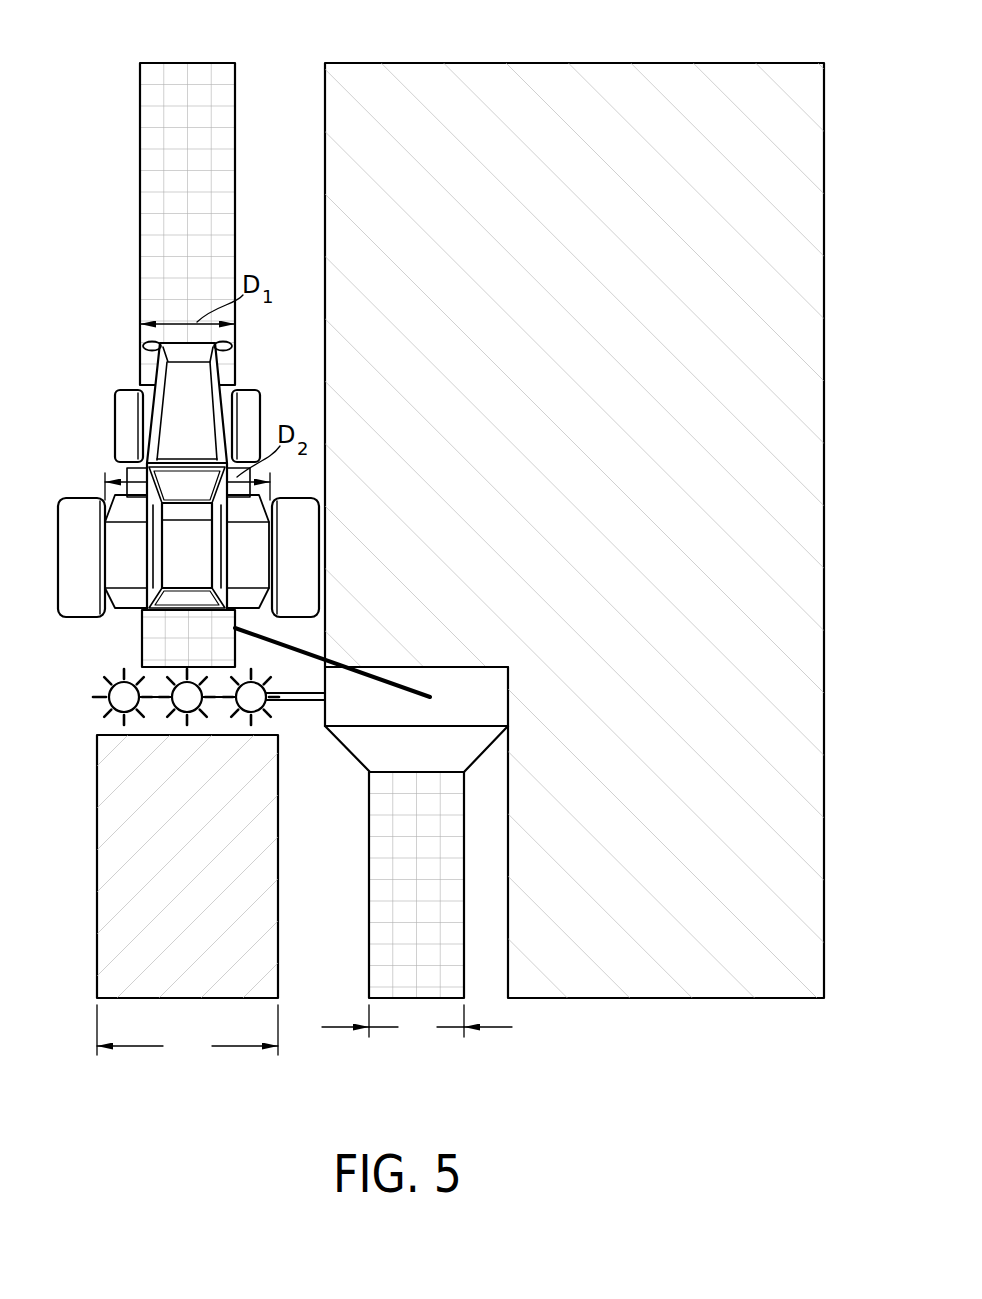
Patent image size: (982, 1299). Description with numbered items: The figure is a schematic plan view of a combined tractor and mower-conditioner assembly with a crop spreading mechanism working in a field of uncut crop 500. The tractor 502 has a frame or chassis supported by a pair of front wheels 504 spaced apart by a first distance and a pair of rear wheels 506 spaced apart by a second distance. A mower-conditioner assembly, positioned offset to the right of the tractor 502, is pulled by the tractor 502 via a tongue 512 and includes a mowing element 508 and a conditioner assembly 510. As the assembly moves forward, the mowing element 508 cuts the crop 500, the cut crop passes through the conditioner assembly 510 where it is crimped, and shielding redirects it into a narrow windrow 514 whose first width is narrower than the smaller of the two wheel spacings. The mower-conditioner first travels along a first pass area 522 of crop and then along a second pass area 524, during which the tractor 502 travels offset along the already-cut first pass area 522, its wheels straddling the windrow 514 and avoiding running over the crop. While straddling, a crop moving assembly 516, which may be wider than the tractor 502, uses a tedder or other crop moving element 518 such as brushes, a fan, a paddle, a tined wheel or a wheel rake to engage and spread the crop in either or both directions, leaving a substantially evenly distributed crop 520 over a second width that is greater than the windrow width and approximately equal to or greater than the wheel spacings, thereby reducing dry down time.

The uncut crop 500 is at (592, 71).
The tractor 502 is at (185, 554).
The front wheels 504 is at (122, 425).
The rear wheels 506 is at (78, 533).
The mowing element 508 is at (503, 693).
The conditioner assembly 510 is at (367, 753).
The tongue 512 is at (420, 690).
The windrow 514 is at (150, 168).
The crop moving assembly 516 is at (97, 707).
The crop moving element 518 is at (113, 690).
The evenly distributed crop 520 is at (100, 858).
The first pass area 522 is at (149, 1070).
The second pass area 524 is at (457, 1048).